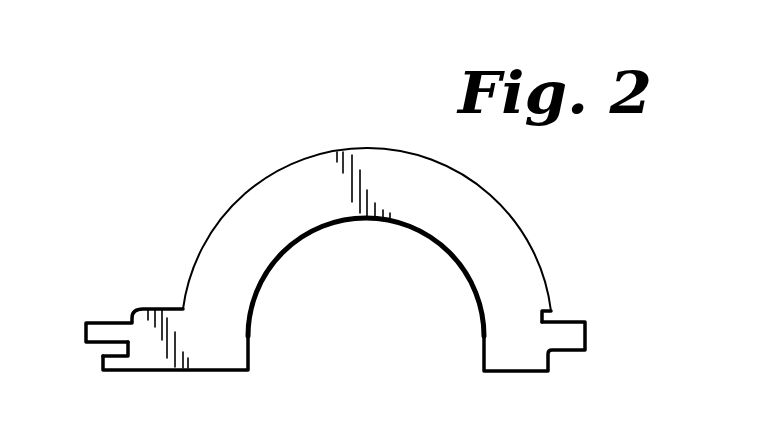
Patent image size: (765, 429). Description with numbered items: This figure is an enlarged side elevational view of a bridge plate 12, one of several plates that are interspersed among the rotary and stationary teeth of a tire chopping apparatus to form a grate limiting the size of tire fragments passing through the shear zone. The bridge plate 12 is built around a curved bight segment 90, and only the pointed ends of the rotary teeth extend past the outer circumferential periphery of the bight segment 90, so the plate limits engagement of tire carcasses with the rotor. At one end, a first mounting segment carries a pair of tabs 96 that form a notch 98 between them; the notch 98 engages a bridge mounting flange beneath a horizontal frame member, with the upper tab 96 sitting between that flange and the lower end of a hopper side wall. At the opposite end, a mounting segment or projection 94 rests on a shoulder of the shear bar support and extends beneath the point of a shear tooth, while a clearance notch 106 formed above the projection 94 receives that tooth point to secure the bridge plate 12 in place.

The bridge plate 12 is at (291, 181).
The curved bight segment 90 is at (498, 248).
The mounting segment 94 is at (585, 340).
The tabs 96 is at (108, 328).
The notch 98 is at (102, 352).
The clearance notch 106 is at (550, 316).